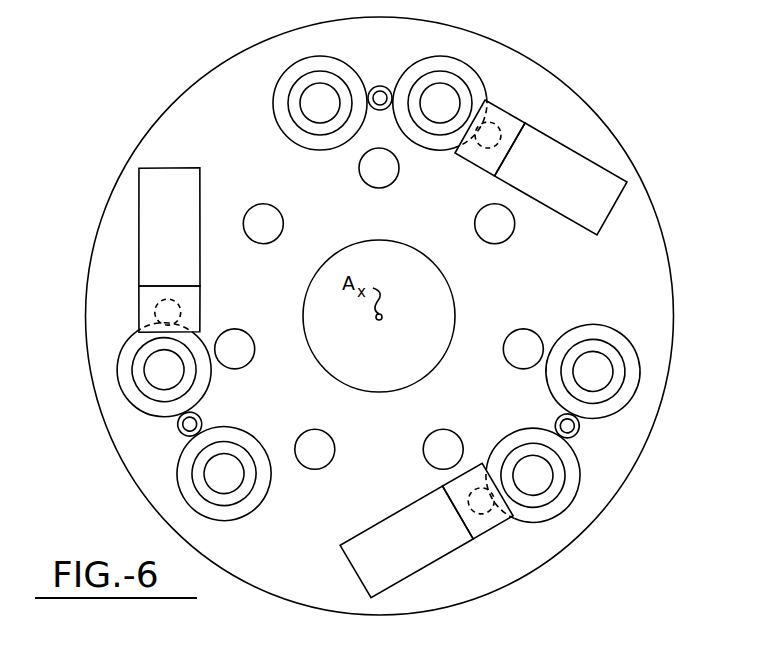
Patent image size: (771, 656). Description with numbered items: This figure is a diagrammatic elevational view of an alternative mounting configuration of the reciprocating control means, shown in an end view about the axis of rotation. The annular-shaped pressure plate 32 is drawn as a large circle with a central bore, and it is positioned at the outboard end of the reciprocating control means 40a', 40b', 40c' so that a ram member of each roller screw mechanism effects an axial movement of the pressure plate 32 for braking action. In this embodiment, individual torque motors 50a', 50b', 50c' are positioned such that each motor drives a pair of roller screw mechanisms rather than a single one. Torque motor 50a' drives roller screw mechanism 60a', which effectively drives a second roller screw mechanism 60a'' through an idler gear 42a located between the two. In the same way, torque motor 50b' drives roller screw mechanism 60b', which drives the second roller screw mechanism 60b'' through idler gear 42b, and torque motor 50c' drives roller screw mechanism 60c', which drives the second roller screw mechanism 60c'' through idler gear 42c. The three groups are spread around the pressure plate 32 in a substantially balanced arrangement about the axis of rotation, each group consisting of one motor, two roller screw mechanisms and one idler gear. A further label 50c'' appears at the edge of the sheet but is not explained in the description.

The pressure plate 32 is at (592, 112).
The roller screw mechanism 60a'' is at (287, 90).
The roller screw mechanism 60a' is at (462, 76).
The idler gear 42a is at (380, 85).
The reciprocating control means 40a' is at (540, 102).
The torque motor 50a' is at (598, 179).
The roller screw mechanism 60b'' is at (632, 371).
The roller screw mechanism 60b' is at (572, 475).
The idler gear 42b is at (570, 437).
The reciprocating control means 40b' is at (560, 516).
The torque motor 50b' is at (441, 542).
The roller screw mechanism 60c'' is at (185, 473).
The roller screw mechanism 60c' is at (125, 369).
The idler gear 42c is at (178, 435).
The reciprocating control means 40c' is at (122, 281).
The torque motor 50c' is at (148, 214).
The weight 50c'' is at (250, 5).